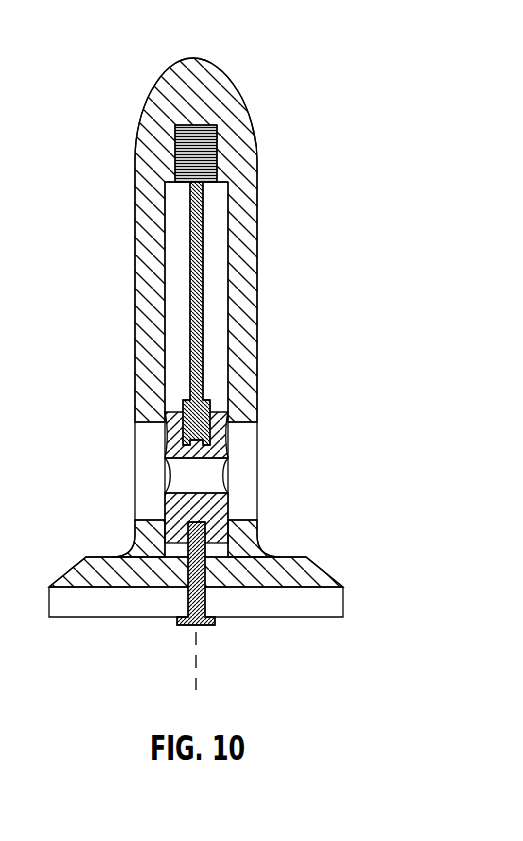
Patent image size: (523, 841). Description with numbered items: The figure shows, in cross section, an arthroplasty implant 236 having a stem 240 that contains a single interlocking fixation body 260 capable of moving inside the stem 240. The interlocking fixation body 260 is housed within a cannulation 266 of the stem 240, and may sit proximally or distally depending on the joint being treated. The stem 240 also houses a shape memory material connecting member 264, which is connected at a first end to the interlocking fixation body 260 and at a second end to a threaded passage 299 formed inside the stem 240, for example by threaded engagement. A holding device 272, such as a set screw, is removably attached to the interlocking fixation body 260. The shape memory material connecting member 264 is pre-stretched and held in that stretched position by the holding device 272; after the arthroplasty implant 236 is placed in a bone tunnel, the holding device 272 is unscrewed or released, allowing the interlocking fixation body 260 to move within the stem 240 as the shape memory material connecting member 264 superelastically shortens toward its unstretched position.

The arthroplasty implant 236 is at (243, 63).
The stem 240 is at (238, 255).
The interlocking fixation body 260 is at (172, 457).
The shape memory material connecting member 264 is at (198, 350).
The cannulation 266 is at (213, 382).
The holding device 272 is at (207, 602).
The threaded passage 299 is at (218, 163).